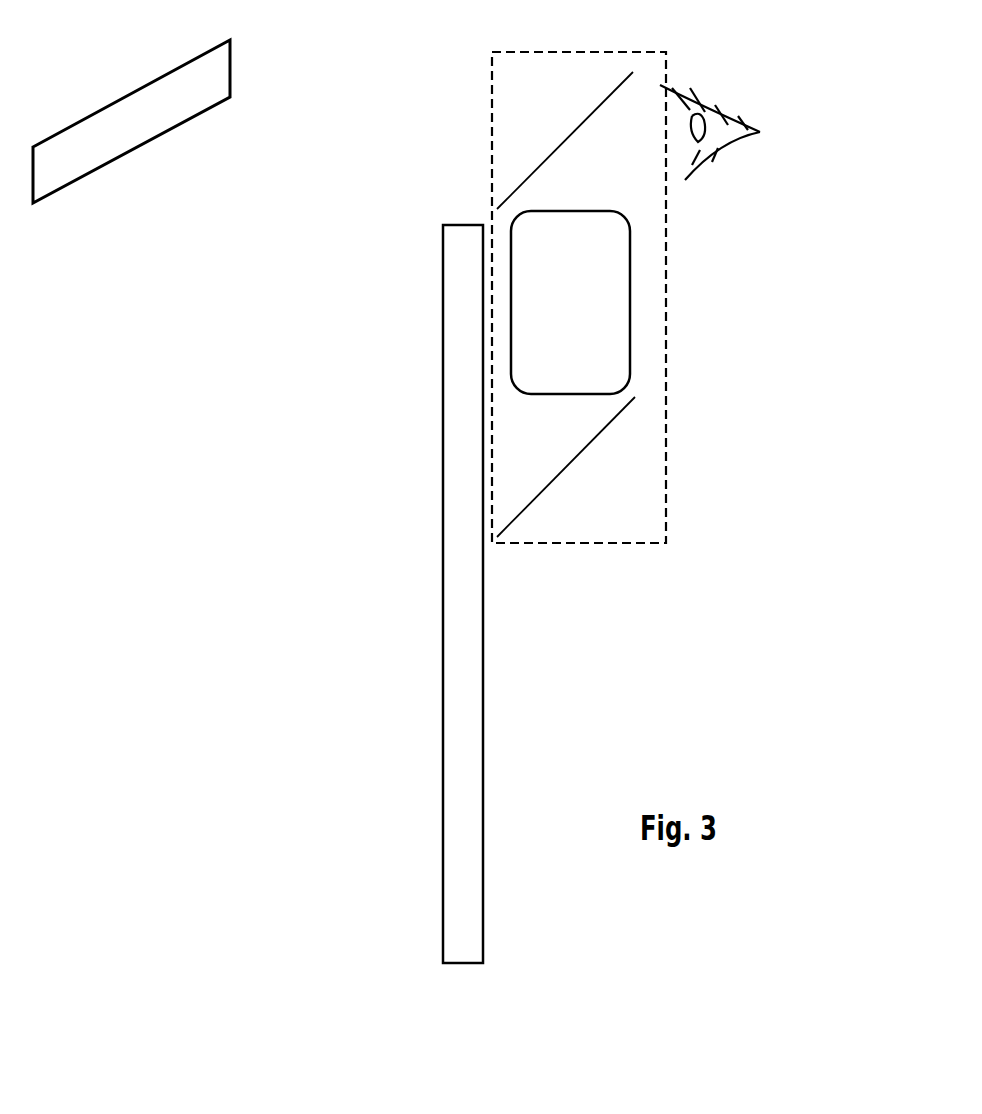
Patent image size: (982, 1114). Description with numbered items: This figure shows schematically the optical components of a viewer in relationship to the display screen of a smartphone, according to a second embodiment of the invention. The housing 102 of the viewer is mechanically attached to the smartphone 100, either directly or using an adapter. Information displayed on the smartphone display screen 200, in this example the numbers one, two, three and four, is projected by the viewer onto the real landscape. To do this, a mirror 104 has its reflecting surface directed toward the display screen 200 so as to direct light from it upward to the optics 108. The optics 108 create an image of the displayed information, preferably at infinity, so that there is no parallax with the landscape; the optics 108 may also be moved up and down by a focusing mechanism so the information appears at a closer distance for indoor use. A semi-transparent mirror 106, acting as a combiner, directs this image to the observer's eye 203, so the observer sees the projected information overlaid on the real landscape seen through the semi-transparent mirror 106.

The smartphone 100 is at (443, 668).
The housing 102 is at (597, 543).
The mirror 104 is at (562, 475).
The semi-transparent mirror 106 is at (632, 76).
The optics 108 is at (630, 323).
The observer's eye 203 is at (749, 132).
The smartphone display screen 200 is at (131, 121).